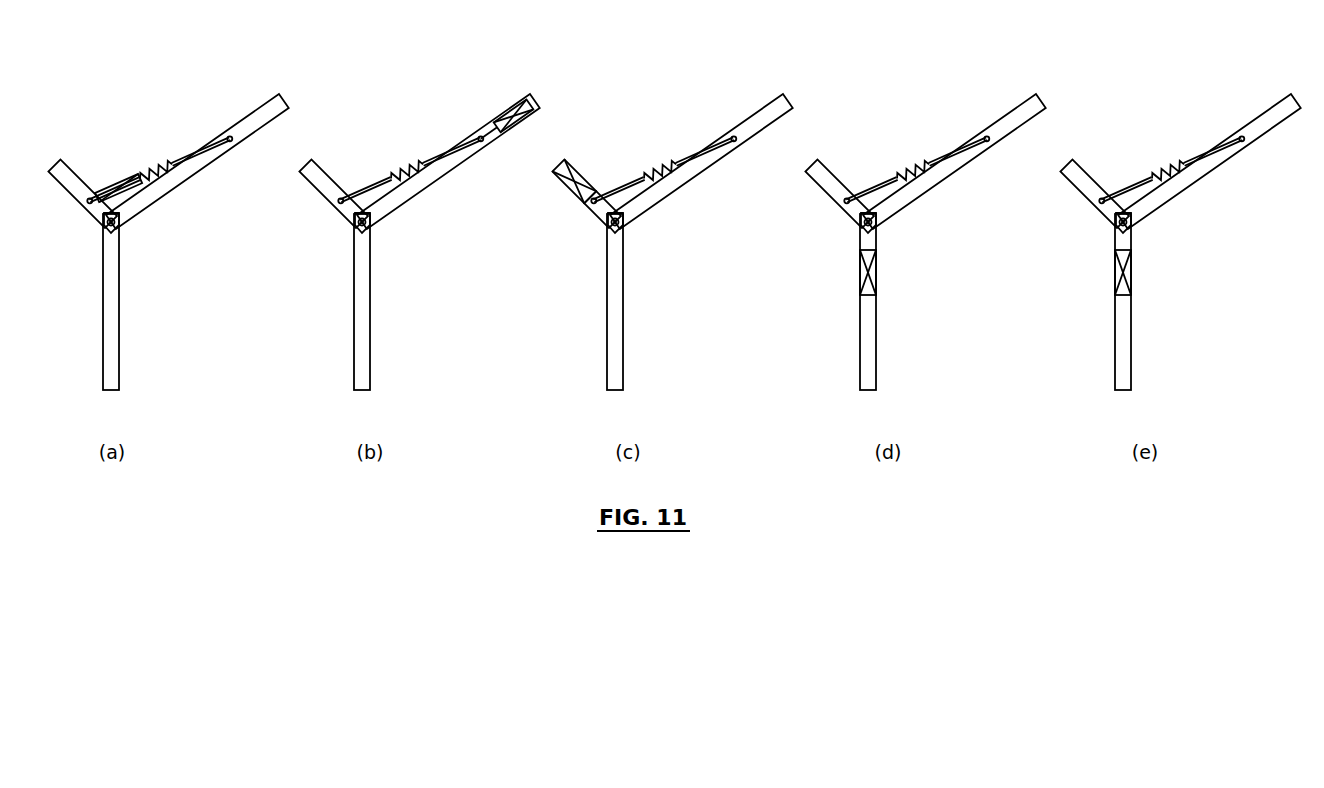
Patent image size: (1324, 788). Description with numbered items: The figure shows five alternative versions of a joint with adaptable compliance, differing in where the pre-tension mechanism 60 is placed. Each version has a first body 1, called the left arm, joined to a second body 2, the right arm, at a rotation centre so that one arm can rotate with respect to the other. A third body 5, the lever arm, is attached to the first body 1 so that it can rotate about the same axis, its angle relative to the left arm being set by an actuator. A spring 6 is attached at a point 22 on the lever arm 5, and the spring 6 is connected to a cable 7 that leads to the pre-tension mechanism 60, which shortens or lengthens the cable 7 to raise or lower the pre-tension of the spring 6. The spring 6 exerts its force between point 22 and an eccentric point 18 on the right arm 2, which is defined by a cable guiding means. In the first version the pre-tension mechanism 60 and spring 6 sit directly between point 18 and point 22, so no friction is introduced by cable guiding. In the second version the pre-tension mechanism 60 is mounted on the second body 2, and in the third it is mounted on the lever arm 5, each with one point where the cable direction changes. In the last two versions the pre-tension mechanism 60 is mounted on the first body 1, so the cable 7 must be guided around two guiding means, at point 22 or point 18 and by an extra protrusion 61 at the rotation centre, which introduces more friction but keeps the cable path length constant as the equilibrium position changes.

The first body 1 is at (112, 372).
The second body 2 is at (277, 102).
The third body 5 is at (62, 172).
The spring 6 is at (157, 167).
The cable 7 is at (183, 160).
The eccentric point 18 is at (230, 141).
The point on the lever arm 22 is at (88, 203).
The pre-tension mechanism 60 is at (120, 187).
The extra protrusion 61 is at (876, 224).